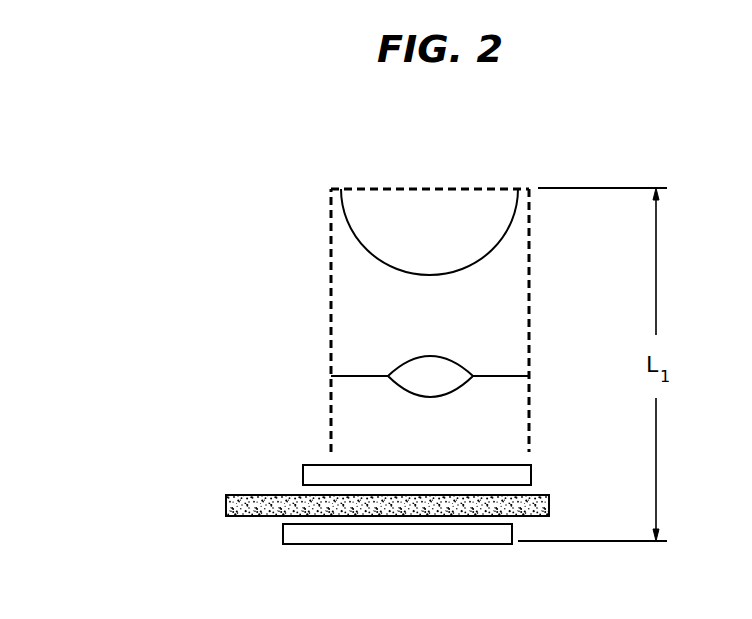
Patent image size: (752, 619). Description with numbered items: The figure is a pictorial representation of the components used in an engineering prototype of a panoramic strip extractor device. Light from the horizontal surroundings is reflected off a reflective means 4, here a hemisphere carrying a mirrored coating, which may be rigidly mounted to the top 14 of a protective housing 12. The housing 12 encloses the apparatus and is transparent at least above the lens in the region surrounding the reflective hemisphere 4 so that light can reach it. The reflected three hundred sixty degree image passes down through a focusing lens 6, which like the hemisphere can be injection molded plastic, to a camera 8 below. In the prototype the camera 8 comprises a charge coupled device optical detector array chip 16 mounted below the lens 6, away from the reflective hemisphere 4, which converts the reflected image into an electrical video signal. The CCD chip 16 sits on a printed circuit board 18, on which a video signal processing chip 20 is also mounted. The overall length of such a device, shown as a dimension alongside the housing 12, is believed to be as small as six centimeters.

The reflective means 4 is at (365, 240).
The focusing lens 6 is at (402, 365).
The camera 8 is at (153, 462).
The housing 12 is at (330, 335).
The top of the housing 14 is at (498, 188).
The CCD optical detector array chip 16 is at (318, 465).
The printed circuit board 18 is at (226, 497).
The video signal processing chip 20 is at (297, 543).